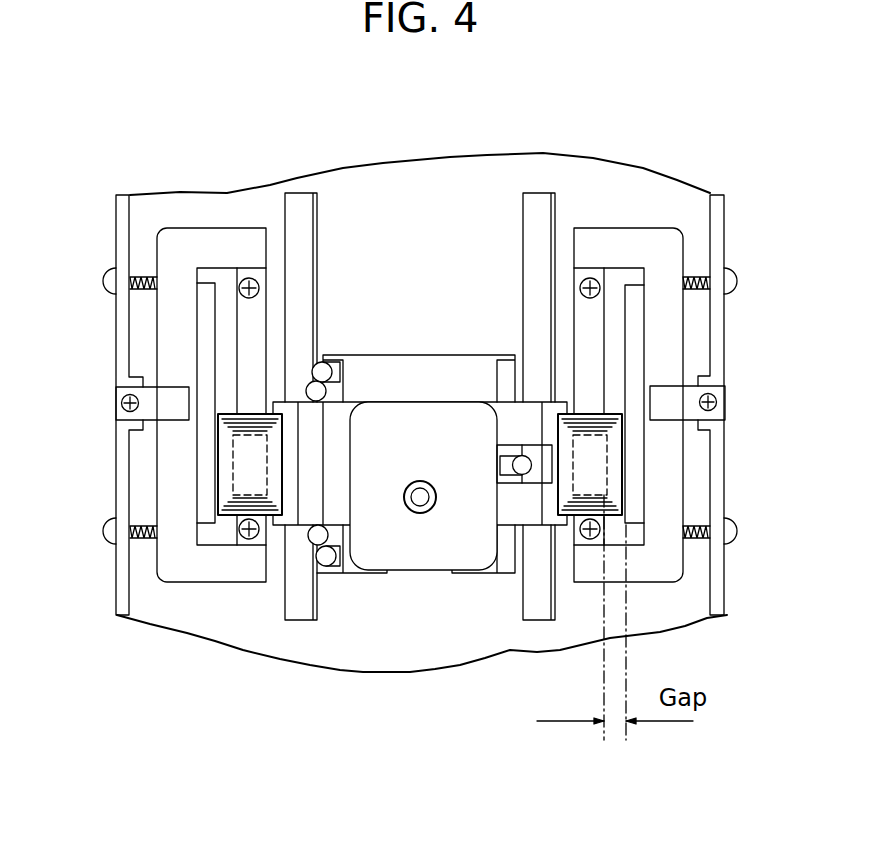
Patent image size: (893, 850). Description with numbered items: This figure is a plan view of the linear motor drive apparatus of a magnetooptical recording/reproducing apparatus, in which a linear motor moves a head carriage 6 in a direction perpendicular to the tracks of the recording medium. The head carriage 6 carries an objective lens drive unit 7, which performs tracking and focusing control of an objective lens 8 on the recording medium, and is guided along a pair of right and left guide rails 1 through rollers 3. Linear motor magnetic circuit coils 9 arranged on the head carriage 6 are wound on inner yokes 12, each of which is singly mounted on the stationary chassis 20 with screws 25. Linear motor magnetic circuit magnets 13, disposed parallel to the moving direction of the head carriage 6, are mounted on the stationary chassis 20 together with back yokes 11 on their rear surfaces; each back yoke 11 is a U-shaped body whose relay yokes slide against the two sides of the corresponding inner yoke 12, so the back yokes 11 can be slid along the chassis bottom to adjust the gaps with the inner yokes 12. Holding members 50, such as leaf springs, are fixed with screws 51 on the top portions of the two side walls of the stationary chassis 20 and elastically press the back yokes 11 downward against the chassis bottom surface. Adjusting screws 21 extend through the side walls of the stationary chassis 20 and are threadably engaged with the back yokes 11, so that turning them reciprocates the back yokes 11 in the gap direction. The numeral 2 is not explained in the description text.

The guide rail 1 is at (300, 613).
The carriage 2 is at (328, 362).
The roller 3 is at (332, 560).
The head carriage 6 is at (422, 370).
The objective lens drive unit 7 is at (450, 415).
The objective lens 8 is at (420, 500).
The linear motor magnetic circuit coil 9 is at (270, 458).
The back yoke 11 is at (200, 245).
The inner yoke 12 is at (257, 322).
The linear motor magnetic circuit magnet 13 is at (632, 350).
The stationary chassis 20 is at (670, 190).
The adjusting screw 21 is at (107, 282).
The screw 25 is at (249, 280).
The holding member 50 is at (140, 410).
The screw 51 is at (127, 398).